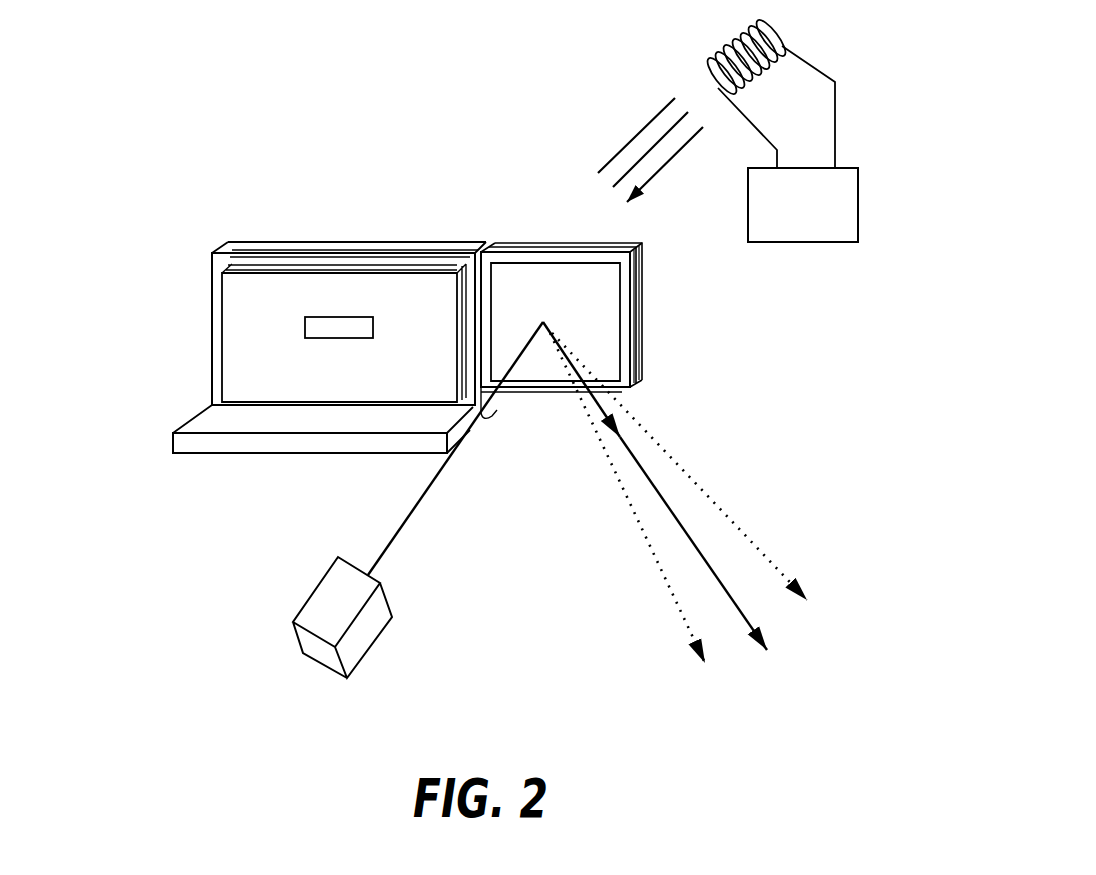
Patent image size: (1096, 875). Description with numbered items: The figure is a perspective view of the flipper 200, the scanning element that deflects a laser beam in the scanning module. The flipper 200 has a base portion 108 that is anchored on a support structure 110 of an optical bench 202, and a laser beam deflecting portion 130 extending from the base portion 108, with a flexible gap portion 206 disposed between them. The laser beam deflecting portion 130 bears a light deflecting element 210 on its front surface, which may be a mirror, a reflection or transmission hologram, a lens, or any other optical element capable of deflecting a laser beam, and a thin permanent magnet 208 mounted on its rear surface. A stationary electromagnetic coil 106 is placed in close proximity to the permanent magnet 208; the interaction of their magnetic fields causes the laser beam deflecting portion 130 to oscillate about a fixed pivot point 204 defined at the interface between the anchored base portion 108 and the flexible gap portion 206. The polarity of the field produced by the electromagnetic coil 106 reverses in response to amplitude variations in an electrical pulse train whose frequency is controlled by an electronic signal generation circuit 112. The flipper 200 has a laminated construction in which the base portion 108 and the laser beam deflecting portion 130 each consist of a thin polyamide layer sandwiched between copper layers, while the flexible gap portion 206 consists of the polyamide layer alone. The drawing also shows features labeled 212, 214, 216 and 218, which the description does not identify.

The electromagnetic coil 106 is at (730, 52).
The base portion 108 is at (237, 355).
The support structure 110 is at (220, 248).
The electronic signal generation circuit 112 is at (810, 243).
The laser beam deflecting portion 130 is at (617, 348).
The flipper 200 is at (722, 404).
The optical bench 202 is at (172, 438).
The fixed pivot point 204 is at (468, 280).
The flexible gap portion 206 is at (492, 247).
The permanent magnet 208 is at (592, 281).
The light deflecting element 210 is at (580, 310).
The display layer 212 is at (317, 338).
The display window 214 is at (338, 328).
The light emitter 216 is at (382, 625).
The reflected light ray 218 is at (610, 418).